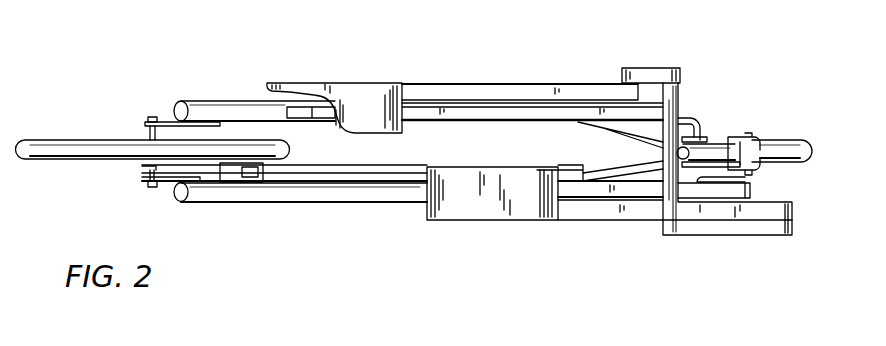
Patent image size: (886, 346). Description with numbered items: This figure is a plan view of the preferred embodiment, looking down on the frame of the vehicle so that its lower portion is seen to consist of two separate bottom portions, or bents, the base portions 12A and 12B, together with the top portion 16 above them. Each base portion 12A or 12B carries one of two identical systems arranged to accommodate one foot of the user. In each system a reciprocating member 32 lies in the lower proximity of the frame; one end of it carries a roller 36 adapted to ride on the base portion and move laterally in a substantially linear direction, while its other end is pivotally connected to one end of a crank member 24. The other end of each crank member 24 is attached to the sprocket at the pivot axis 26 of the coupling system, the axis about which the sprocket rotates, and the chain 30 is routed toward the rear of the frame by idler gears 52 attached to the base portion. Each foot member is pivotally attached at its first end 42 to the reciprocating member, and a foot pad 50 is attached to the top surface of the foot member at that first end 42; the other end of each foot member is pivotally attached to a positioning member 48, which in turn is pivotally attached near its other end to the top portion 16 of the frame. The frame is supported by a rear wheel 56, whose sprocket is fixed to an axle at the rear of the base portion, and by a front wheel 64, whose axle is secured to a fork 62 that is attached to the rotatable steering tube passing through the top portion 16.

The base portion 12A is at (209, 107).
The base portion 12B is at (280, 190).
The top portion 16 is at (706, 153).
The crank member 24 is at (692, 125).
The pivot axis 26 is at (702, 157).
The chain 30 is at (168, 175).
The reciprocating member 32 is at (415, 110).
The roller 36 is at (305, 113).
The first end 42 is at (476, 95).
The positioning member 48 is at (650, 72).
The foot pad 50 is at (330, 88).
The idler gear 52 is at (250, 172).
The rear wheel 56 is at (77, 152).
The fork 62 is at (752, 133).
The front wheel 64 is at (805, 155).